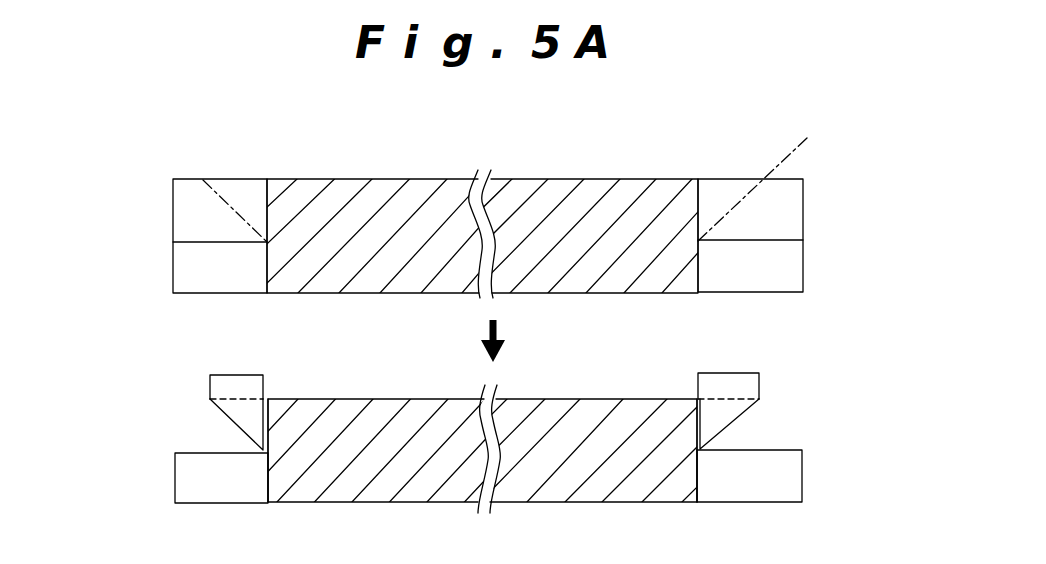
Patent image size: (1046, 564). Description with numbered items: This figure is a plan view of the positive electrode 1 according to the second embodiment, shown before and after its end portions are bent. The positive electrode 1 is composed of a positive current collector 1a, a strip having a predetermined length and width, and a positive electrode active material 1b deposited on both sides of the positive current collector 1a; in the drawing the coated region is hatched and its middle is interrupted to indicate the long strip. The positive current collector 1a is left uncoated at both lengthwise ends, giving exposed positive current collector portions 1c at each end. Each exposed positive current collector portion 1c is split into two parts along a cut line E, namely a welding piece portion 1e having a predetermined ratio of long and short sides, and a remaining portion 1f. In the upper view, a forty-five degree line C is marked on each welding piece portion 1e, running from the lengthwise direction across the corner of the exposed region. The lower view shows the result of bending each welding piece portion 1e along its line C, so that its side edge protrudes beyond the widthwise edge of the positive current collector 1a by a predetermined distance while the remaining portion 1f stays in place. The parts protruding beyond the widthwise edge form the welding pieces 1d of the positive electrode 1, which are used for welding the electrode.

The positive electrode 1 is at (720, 514).
The positive current collector 1a is at (409, 177).
The positive electrode active material 1b is at (590, 197).
The exposed positive current collector portions 1c is at (97, 180).
The welding pieces 1d is at (243, 380).
The welding piece portion 1e is at (187, 202).
The remaining portion 1f is at (190, 262).
The 45° line C is at (266, 240).
The cut line E is at (230, 243).